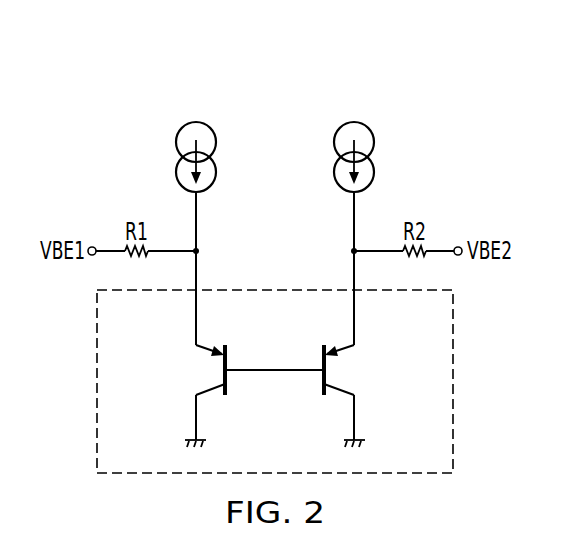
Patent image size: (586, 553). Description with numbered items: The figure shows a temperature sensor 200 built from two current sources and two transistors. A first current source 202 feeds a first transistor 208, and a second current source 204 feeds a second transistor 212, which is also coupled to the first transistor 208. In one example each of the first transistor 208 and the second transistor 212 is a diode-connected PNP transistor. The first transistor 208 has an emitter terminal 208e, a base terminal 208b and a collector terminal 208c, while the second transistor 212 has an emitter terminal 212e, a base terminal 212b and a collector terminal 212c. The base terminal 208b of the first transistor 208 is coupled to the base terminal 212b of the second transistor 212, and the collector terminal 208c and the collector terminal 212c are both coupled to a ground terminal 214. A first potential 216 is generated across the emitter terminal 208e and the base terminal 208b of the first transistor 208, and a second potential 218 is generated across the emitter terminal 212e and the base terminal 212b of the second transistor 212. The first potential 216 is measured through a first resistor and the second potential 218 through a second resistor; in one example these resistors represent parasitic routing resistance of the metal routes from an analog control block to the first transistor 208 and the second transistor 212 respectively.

The temperature sensor 200 is at (405, 86).
The first current source 202 is at (176, 142).
The second current source 204 is at (374, 142).
The first transistor 208 is at (221, 368).
The emitter terminal 208e is at (196, 323).
The base terminal 208b is at (244, 367).
The collector terminal 208c is at (196, 405).
The second transistor 212 is at (358, 368).
The emitter terminal 212e is at (354, 323).
The base terminal 212b is at (305, 367).
The collector terminal 212c is at (354, 405).
The ground terminal 214 is at (185, 442).
The first potential VBE1 216 is at (106, 213).
The second potential VBE2 218 is at (444, 213).